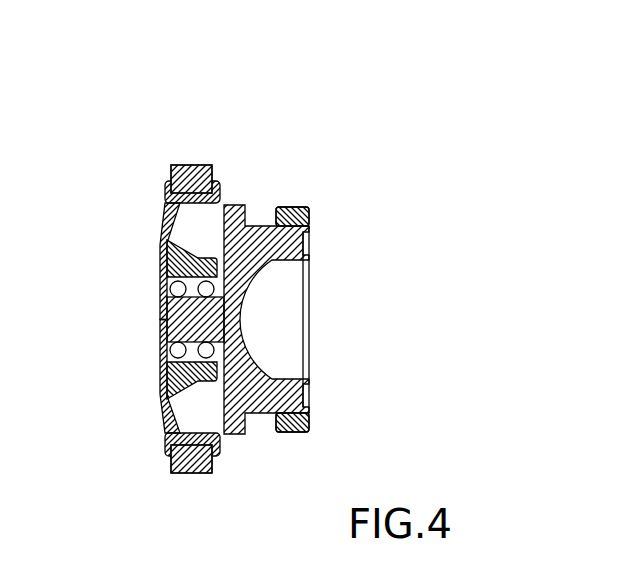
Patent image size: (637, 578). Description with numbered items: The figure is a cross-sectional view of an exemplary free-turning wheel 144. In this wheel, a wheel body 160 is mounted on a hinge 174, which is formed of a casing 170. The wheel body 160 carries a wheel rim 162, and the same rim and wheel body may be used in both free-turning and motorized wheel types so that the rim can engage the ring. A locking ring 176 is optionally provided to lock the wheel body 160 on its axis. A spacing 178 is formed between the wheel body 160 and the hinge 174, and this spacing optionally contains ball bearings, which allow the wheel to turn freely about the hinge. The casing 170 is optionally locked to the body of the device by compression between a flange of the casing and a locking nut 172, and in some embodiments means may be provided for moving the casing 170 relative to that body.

The free-turning wheel 144 is at (283, 110).
The wheel body 160 is at (162, 226).
The wheel rim 162 is at (197, 165).
The casing 170 is at (261, 225).
The locking nut 172 is at (302, 210).
The hinge 174 is at (163, 342).
The locking ring 176 is at (162, 298).
The spacing 178 is at (167, 278).